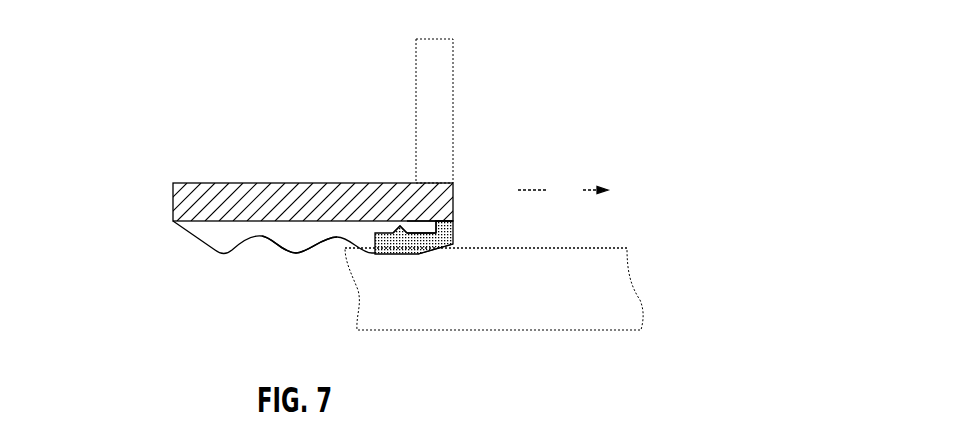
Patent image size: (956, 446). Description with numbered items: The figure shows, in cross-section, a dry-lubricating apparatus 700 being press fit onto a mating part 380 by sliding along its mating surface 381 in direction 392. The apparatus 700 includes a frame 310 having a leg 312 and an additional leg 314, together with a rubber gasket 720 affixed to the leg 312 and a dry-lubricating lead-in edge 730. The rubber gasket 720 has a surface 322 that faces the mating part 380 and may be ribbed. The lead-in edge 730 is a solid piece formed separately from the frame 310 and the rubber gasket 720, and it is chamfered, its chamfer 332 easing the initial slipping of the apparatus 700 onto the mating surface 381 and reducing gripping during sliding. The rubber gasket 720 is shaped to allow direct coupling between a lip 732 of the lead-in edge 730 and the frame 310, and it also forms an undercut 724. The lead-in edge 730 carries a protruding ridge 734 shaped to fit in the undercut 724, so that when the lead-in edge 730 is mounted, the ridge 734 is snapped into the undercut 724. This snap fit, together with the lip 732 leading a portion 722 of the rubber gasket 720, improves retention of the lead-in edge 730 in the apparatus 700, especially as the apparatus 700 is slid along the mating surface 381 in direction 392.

The dry-lubricating apparatus 700 is at (183, 78).
The frame 310 is at (143, 205).
The leg 312 is at (230, 183).
The additional leg 314 is at (455, 112).
The surface 322 is at (226, 263).
The rubber gasket 720 is at (287, 253).
The portion of rubber gasket 722 is at (423, 227).
The undercut 724 is at (402, 248).
The dry-lubricating lead-in edge 730 is at (433, 257).
The lip 732 is at (445, 230).
The protruding ridge 734 is at (400, 226).
The chamfer 332 is at (453, 255).
The mating part 380 is at (603, 319).
The mating surface 381 is at (505, 240).
The direction 392 is at (563, 189).